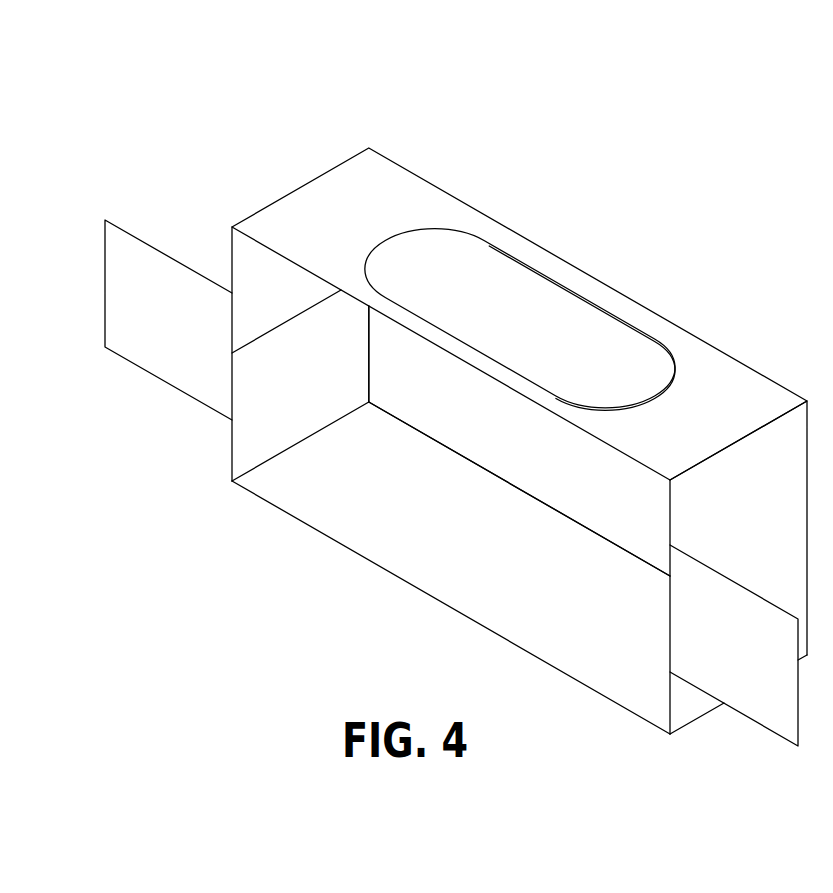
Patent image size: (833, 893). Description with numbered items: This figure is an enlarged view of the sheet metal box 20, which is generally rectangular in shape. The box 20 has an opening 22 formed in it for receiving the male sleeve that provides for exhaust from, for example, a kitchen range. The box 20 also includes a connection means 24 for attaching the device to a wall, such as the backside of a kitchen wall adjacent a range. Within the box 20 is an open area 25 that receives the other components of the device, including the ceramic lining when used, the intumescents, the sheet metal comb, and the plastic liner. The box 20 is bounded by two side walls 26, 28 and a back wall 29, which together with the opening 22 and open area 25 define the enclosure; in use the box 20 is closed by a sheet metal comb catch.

The sheet metal box 20 is at (283, 150).
The opening 22 is at (500, 302).
The connection means 24 is at (175, 345).
The open area 25 is at (428, 540).
The side wall 26 is at (303, 384).
The side wall 28 is at (763, 527).
The back wall 29 is at (506, 440).